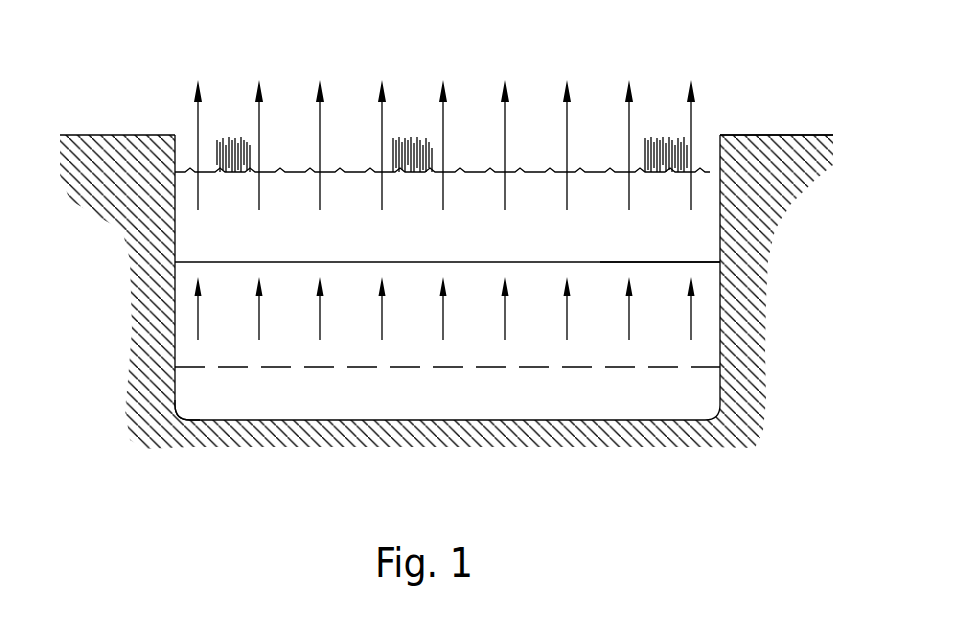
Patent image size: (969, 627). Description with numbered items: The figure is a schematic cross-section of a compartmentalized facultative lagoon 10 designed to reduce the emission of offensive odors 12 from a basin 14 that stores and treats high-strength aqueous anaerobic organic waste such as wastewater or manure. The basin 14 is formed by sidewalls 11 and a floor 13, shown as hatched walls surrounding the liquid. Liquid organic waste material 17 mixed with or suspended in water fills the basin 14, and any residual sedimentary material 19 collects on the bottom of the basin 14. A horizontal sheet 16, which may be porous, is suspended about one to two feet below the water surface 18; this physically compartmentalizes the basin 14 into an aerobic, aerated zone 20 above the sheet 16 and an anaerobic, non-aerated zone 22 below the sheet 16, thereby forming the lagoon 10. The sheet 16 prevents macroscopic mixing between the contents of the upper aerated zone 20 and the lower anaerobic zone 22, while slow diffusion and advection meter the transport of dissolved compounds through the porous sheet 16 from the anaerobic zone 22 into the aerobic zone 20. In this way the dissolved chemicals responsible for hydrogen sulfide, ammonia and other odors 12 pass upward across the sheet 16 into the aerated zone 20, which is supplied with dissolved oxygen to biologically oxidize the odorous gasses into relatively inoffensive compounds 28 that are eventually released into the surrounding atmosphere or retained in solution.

The compartmentalized facultative lagoon 10 is at (110, 297).
The sidewalls 11 is at (173, 357).
The offensive odors 12 is at (632, 305).
The floor 13 is at (603, 417).
The basin 14 is at (217, 232).
The sheet 16 is at (683, 259).
The liquid organic waste material 17 is at (410, 308).
The water surface 18 is at (543, 170).
The residual sedimentary material 19 is at (250, 393).
The aerobic zone 20 is at (660, 228).
The anaerobic zone 22 is at (618, 343).
The relatively inoffensive compounds 28 is at (199, 118).